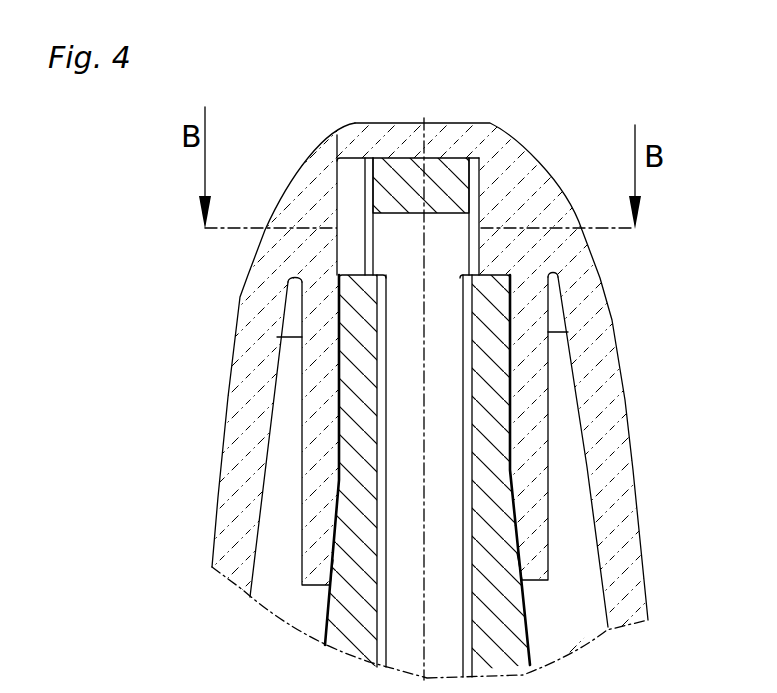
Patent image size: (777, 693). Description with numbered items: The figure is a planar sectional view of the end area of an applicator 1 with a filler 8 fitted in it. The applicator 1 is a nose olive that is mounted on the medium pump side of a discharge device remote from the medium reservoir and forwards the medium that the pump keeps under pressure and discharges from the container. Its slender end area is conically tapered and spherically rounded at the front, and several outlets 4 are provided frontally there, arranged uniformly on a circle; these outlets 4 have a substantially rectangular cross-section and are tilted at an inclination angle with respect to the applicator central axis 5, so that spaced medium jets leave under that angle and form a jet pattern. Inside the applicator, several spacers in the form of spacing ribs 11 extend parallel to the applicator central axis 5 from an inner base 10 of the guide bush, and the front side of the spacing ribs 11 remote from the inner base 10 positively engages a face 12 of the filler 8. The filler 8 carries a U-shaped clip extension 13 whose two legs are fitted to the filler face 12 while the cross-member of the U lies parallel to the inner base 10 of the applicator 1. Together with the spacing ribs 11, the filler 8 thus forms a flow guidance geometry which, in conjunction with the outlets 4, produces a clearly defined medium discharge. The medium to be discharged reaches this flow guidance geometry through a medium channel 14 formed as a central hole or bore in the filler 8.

The applicator 1 is at (553, 92).
The outlets 4 is at (351, 148).
The applicator central axis 5 is at (423, 449).
The filler 8 is at (358, 462).
The inner base 10 is at (402, 158).
The spacing ribs 11 is at (353, 254).
The face 12 is at (483, 276).
The U-shaped clip extension 13 is at (447, 181).
The medium channel 14 is at (448, 602).